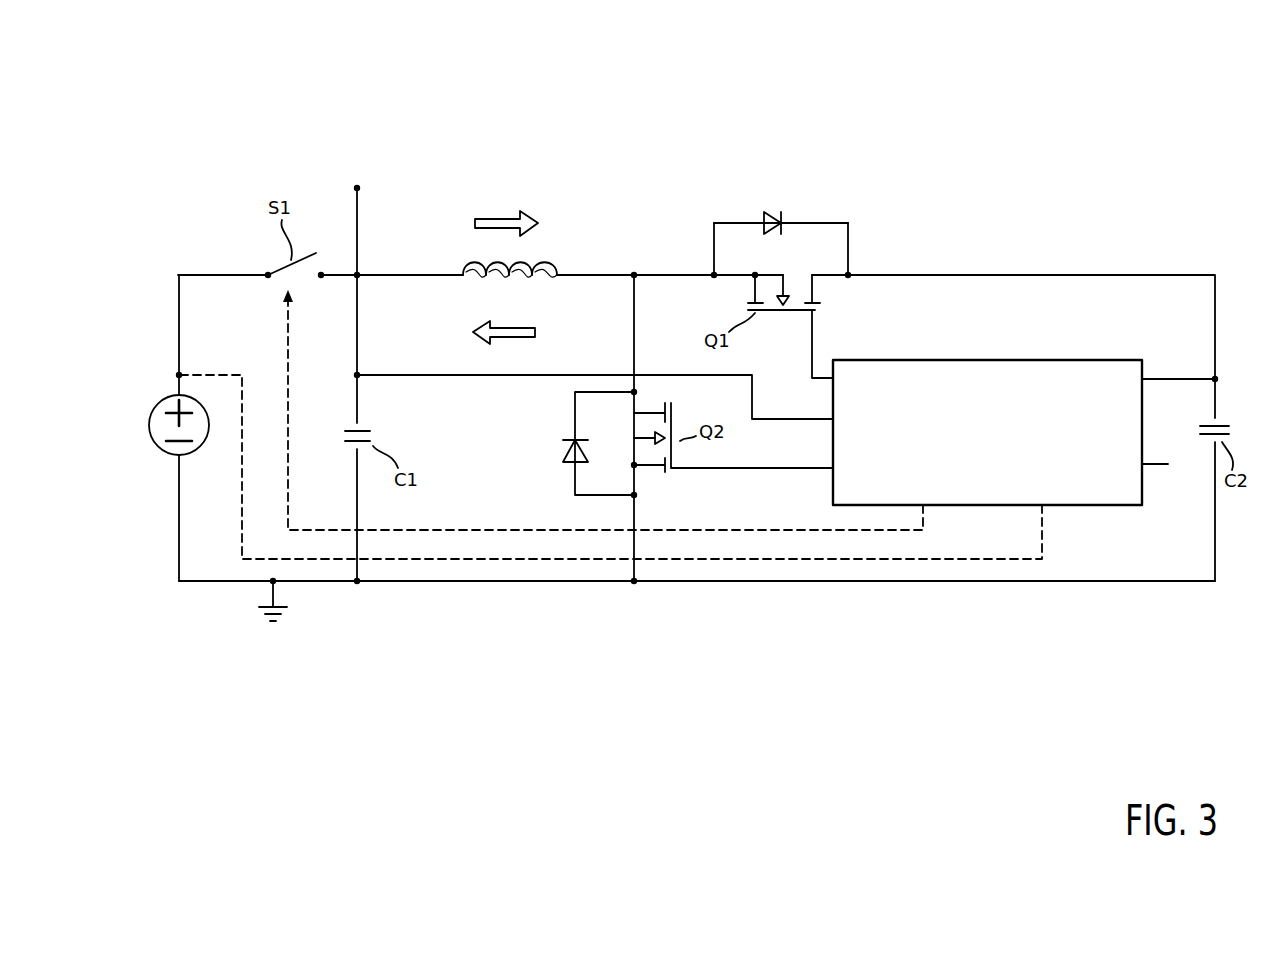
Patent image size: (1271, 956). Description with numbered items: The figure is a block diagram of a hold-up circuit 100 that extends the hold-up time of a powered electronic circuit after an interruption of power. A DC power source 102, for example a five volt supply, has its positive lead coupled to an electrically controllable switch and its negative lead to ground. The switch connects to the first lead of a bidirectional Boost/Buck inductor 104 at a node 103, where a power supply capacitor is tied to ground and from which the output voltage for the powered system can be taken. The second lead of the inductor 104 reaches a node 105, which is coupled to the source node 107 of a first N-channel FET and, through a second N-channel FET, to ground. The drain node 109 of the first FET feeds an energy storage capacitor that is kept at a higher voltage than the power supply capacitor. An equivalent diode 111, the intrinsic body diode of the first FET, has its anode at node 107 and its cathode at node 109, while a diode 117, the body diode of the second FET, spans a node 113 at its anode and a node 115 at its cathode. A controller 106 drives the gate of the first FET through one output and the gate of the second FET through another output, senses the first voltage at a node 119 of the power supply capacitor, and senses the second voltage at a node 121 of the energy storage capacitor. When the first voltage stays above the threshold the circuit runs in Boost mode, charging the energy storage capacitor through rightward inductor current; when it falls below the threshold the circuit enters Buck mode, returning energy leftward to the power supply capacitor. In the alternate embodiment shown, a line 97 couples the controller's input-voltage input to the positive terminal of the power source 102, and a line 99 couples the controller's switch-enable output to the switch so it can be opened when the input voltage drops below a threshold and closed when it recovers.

The line 97 is at (768, 561).
The line 99 is at (746, 529).
The hold-up circuit 100 is at (1101, 225).
The DC power source 102 is at (173, 455).
The node 103 is at (360, 279).
The bidirectional Boost/Buck inductor 104 is at (462, 264).
The node 105 is at (634, 272).
The controller 106 is at (1004, 359).
The source node 107 is at (714, 272).
The drain node 109 is at (849, 272).
The equivalent diode 111 is at (772, 216).
The node 113 is at (640, 495).
The node 115 is at (640, 391).
The diode 117 is at (563, 456).
The node 119 is at (360, 378).
The node 121 is at (1213, 378).